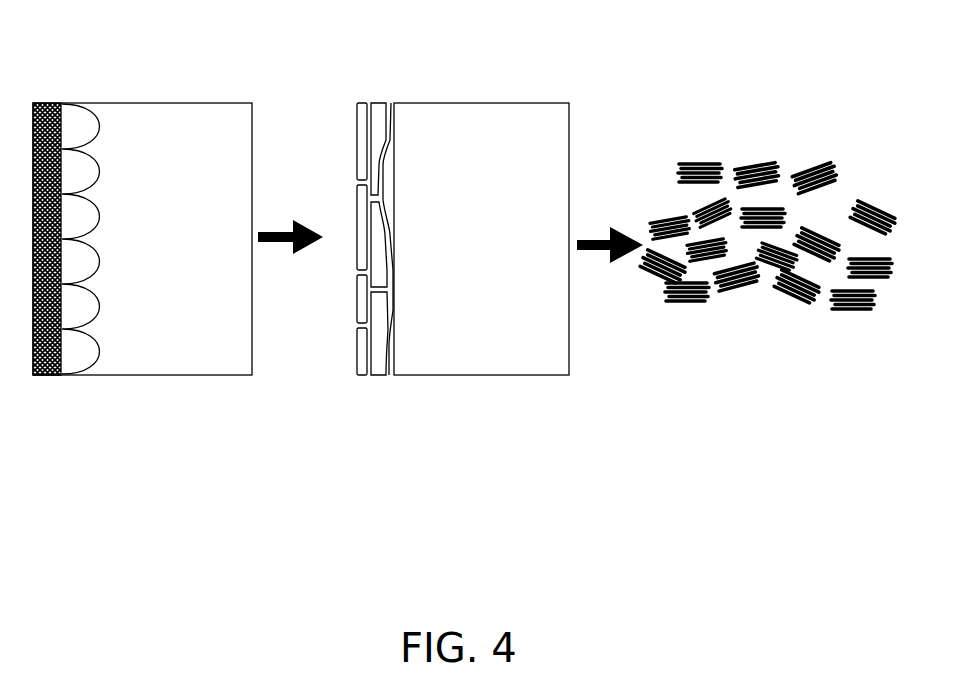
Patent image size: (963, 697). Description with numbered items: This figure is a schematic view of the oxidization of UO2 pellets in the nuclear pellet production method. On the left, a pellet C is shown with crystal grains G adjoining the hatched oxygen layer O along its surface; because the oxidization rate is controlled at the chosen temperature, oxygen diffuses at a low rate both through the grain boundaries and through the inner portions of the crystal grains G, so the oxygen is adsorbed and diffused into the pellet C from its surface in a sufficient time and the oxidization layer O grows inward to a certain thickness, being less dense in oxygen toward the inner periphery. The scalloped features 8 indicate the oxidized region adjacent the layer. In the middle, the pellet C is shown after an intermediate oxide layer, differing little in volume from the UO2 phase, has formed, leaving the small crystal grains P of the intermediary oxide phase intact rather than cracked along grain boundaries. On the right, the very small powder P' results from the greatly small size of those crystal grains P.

The pellets C is at (183, 92).
The crystal grains G is at (65, 117).
The patterned layer 8 is at (98, 117).
The oxygen layer O is at (42, 376).
The crystal grains of the intermediary oxide phase P is at (375, 269).
The powder P' is at (767, 202).